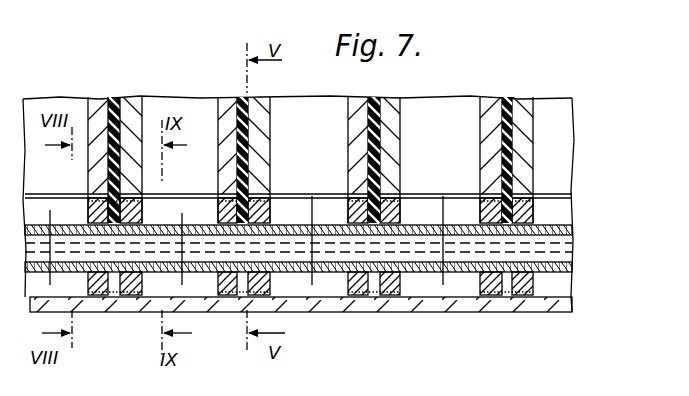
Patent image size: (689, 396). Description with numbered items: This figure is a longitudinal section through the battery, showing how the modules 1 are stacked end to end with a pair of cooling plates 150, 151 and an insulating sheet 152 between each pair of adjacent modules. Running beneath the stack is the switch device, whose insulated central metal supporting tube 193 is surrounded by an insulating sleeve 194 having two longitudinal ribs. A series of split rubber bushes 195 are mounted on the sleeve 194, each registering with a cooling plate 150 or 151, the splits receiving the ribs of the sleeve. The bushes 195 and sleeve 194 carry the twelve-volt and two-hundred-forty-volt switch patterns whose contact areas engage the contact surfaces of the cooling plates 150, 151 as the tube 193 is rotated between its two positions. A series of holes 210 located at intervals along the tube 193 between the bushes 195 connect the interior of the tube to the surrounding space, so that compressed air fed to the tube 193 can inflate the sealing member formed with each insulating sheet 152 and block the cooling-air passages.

The module 1 is at (299, 114).
The cooling plate 150 is at (143, 103).
The cooling plate 151 is at (108, 97).
The insulating sheet 152 is at (134, 100).
The supporting tube 193 is at (567, 238).
The insulating sleeve 194 is at (540, 222).
The split rubber bushes 195 is at (88, 212).
The holes 210 is at (312, 196).